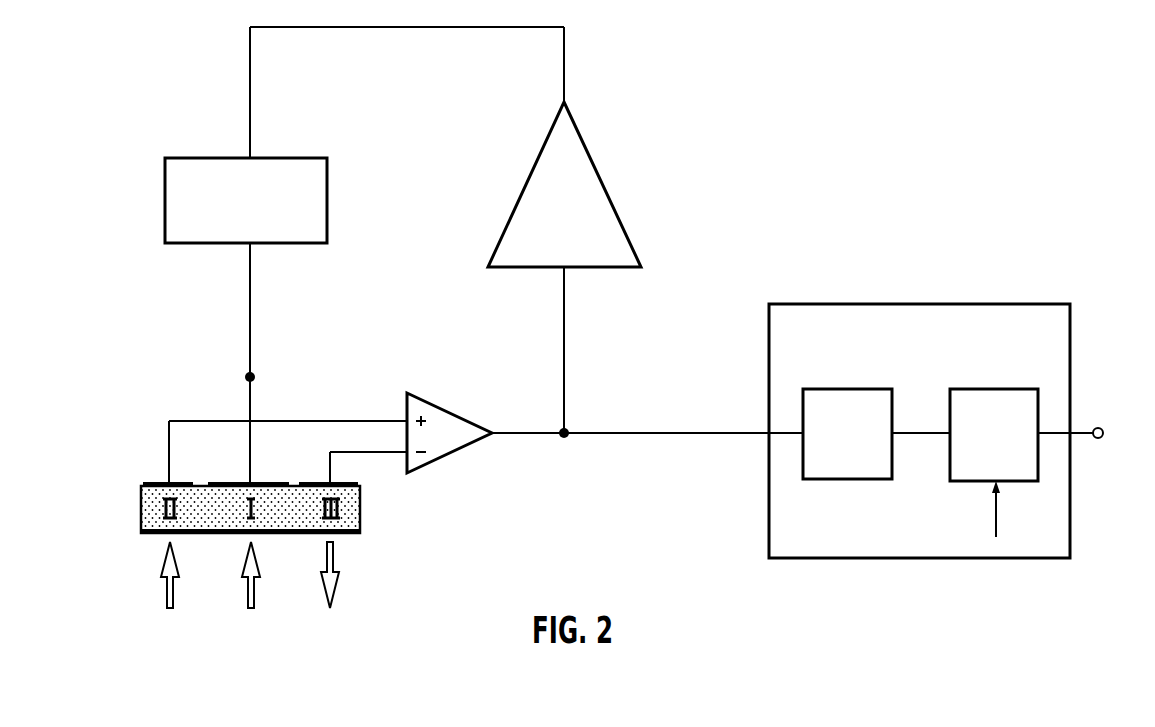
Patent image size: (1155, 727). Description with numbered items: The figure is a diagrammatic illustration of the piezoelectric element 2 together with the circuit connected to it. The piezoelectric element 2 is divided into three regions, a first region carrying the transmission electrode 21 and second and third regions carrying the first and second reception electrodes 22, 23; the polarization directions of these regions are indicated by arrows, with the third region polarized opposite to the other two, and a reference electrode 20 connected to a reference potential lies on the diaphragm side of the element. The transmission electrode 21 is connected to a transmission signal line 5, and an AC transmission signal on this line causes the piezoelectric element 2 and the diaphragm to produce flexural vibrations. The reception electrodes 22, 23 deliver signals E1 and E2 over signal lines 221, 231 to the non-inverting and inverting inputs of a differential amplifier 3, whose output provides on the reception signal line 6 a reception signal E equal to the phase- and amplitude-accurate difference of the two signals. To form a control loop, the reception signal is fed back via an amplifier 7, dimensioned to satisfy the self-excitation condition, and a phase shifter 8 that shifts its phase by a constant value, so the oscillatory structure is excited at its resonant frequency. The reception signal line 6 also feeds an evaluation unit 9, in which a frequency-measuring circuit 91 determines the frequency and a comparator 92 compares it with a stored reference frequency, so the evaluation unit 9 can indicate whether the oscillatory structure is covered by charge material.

The piezoelectric element 2 is at (357, 512).
The reference electrode 20 is at (141, 535).
The transmission electrode 21 is at (230, 482).
The first reception electrode 22 is at (163, 482).
The second reception electrode 23 is at (350, 477).
The signal line 221 is at (325, 420).
The signal line 231 is at (340, 449).
The differential amplifier 3 is at (445, 442).
The transmission signal line 5 is at (248, 400).
The reception signal line 6 is at (527, 436).
The amplifier 7 is at (591, 188).
The phase shifter 8 is at (323, 190).
The evaluation unit 9 is at (778, 319).
The frequency-measuring circuit 91 is at (814, 405).
The comparator 92 is at (1025, 405).